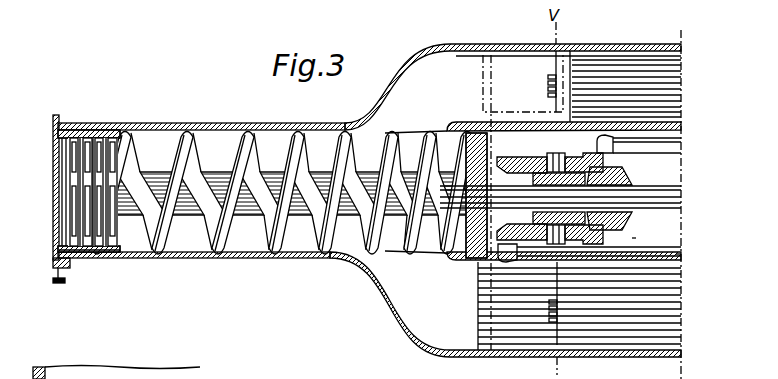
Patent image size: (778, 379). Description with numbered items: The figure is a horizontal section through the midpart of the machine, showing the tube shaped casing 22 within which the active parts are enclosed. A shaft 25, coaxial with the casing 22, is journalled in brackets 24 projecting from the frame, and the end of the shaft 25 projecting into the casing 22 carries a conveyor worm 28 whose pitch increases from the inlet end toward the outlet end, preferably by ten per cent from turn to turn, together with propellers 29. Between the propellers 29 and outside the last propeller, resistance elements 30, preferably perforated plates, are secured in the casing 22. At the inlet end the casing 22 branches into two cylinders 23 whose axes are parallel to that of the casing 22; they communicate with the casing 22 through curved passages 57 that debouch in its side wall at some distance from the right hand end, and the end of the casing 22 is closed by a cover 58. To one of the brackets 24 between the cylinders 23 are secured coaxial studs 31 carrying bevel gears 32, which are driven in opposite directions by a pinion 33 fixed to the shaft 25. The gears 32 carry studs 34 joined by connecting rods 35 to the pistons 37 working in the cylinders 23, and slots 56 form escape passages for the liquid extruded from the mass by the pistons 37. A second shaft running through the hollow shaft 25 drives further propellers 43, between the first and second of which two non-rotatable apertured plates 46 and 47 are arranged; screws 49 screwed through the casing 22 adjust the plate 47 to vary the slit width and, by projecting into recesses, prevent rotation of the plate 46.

The tube shaped casing 22 is at (242, 125).
The cylinders 23 is at (599, 46).
The brackets 24 is at (632, 238).
The shaft 25 is at (678, 190).
The conveyor worm 28 is at (300, 133).
The propellers 29 is at (117, 131).
The resistance elements 30 is at (107, 256).
The studs 31 is at (546, 152).
The bevel gears 32 is at (574, 155).
The pinion 33 is at (632, 178).
The studs 34 is at (610, 148).
The connecting rods 35 is at (676, 254).
The pistons 37 is at (652, 56).
The propellers 43 is at (68, 124).
The plate 46 is at (62, 140).
The plate 47 is at (57, 250).
The screws 49 is at (65, 281).
The slots 56 is at (523, 198).
The curved passages 57 is at (412, 74).
The cover 58 is at (466, 134).